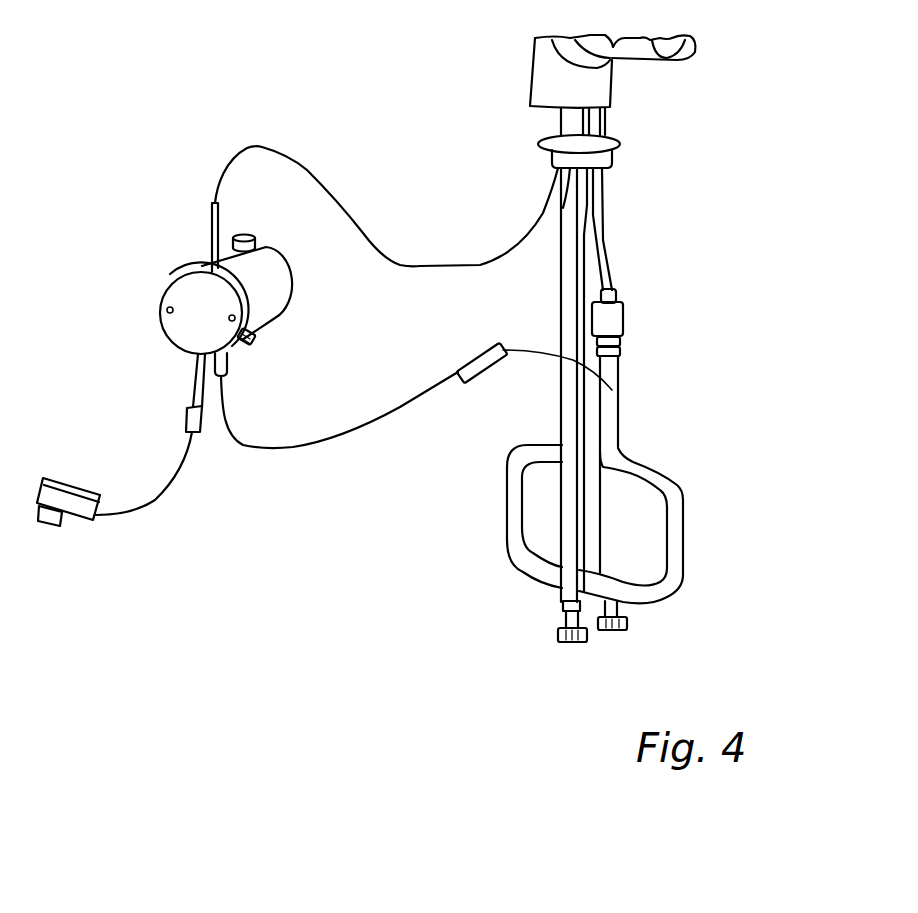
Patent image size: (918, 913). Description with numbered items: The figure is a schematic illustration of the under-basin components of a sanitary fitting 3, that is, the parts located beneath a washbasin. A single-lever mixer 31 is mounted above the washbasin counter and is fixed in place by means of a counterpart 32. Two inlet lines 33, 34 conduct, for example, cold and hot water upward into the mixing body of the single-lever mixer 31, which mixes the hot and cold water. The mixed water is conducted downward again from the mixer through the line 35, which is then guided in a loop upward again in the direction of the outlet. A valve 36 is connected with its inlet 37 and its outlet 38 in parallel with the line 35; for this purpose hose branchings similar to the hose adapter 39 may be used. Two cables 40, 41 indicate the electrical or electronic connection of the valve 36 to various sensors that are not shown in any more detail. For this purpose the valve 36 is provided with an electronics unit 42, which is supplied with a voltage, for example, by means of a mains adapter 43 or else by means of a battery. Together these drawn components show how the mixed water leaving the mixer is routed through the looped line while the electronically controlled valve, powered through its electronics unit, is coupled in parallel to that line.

The respiratory apparatus 3 is at (658, 85).
The single-lever mixer 31 is at (602, 80).
The counterpart 32 is at (613, 148).
The inlet line 33 is at (561, 620).
The inlet line 34 is at (620, 617).
The line 35 is at (512, 513).
The valve 36 is at (272, 272).
The inlet 37 is at (242, 236).
The outlet 38 is at (253, 345).
The hose adapter 39 is at (618, 320).
The cable 40 is at (445, 266).
The cable 41 is at (374, 416).
The electronics unit 42 is at (169, 335).
The mains adapter 43 is at (50, 524).